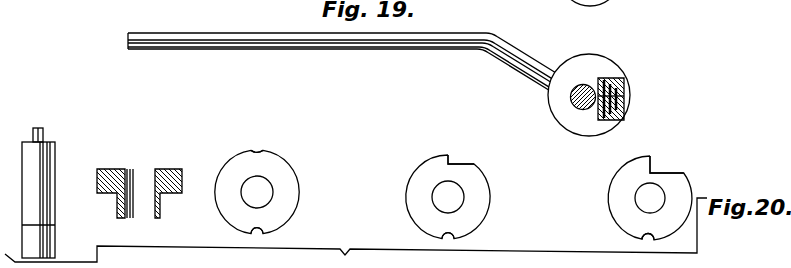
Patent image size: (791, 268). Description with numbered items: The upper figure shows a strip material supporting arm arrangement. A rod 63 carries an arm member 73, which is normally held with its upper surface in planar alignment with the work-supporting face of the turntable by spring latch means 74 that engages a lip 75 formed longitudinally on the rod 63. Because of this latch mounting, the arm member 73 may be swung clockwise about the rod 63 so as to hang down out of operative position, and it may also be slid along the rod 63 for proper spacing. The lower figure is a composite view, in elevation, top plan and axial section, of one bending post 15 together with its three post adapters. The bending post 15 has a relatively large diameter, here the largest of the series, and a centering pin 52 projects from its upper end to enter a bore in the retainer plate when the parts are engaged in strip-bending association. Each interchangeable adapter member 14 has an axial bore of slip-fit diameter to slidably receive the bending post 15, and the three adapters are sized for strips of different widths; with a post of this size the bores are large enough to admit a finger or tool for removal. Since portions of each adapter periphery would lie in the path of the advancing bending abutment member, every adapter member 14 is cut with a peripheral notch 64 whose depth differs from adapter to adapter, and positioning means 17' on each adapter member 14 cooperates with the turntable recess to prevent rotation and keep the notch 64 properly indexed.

In FIG. 19, the arm member 73 is at (324, 47).
In FIG. 19, the rod 63 is at (571, 100).
In FIG. 19, the lip 75 is at (606, 82).
In FIG. 19, the spring latch means 74 is at (604, 112).
In FIG. 20, the bending post 15 is at (53, 168).
In FIG. 20, the centering pin 52 is at (44, 133).
In FIG. 20, the adapter member 14 is at (171, 171).
In FIG. 20, the notch 64 is at (263, 152).
In FIG. 20, the positioning means 17' is at (452, 240).